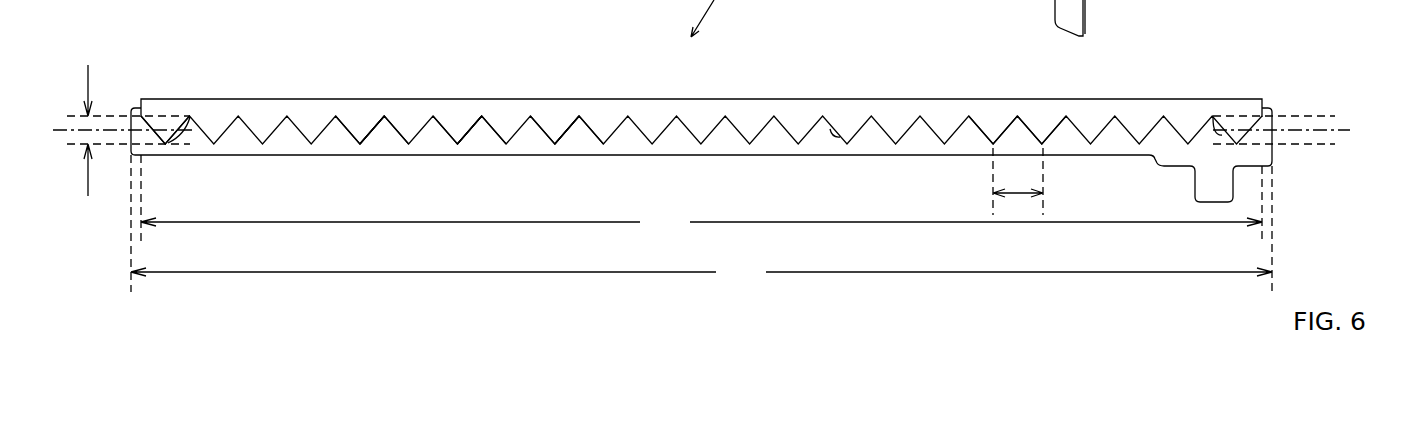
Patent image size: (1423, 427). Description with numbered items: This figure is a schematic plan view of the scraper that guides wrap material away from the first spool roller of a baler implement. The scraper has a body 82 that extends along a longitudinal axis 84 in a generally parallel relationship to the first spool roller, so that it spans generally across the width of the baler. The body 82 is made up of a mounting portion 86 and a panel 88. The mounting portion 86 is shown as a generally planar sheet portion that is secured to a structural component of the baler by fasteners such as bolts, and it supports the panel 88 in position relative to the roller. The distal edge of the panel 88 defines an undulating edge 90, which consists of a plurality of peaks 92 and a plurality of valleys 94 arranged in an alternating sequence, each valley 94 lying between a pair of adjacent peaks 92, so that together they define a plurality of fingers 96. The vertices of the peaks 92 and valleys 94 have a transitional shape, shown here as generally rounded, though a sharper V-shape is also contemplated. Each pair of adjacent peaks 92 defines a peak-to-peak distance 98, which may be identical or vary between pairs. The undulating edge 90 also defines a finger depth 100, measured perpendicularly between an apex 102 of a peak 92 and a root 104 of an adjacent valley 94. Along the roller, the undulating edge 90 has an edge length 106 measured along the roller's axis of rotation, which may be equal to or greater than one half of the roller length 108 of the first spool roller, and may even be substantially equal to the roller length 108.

The body 82 is at (748, 99).
The longitudinal axis 84 is at (1346, 130).
The mounting portion 86 is at (876, 143).
The panel 88 is at (855, 115).
The undulating edge 90 is at (716, 124).
The peaks 92 is at (364, 122).
The valleys 94 is at (384, 116).
The fingers 96 is at (377, 120).
The peak-to-peak distance 98 is at (1016, 196).
The finger depth 100 is at (88, 68).
The apex 102 is at (164, 143).
The root 104 is at (190, 116).
The edge length 106 is at (701, 198).
The roller length 108 is at (701, 223).